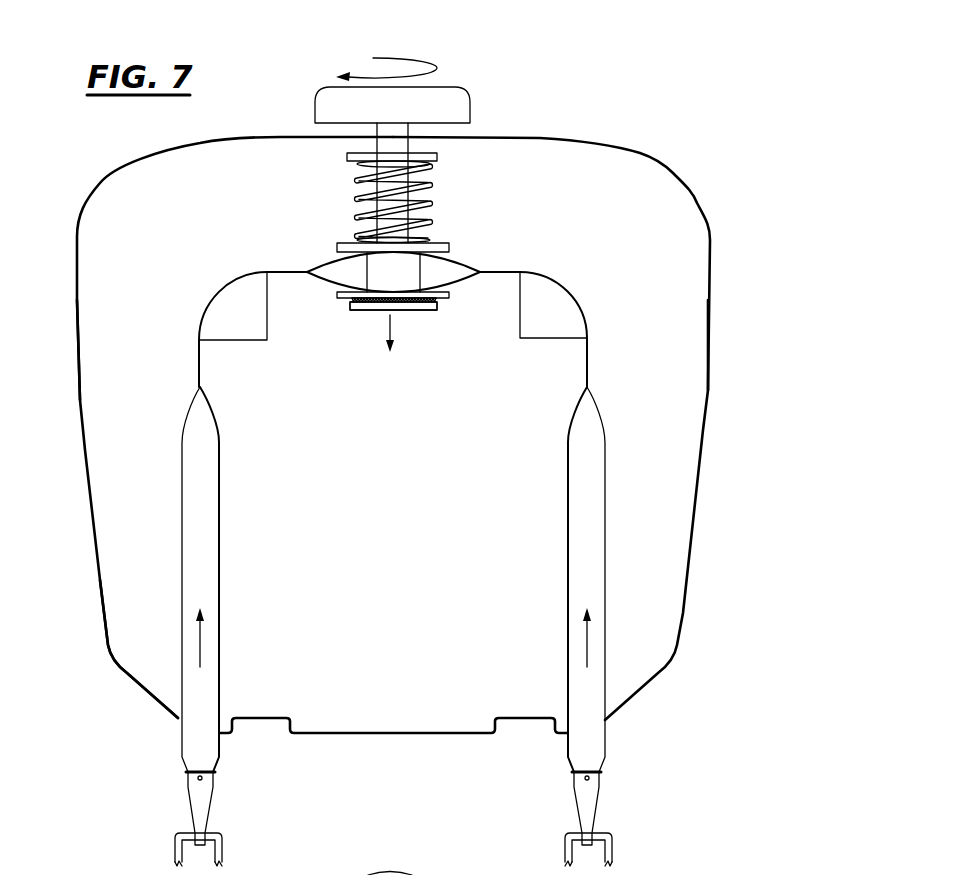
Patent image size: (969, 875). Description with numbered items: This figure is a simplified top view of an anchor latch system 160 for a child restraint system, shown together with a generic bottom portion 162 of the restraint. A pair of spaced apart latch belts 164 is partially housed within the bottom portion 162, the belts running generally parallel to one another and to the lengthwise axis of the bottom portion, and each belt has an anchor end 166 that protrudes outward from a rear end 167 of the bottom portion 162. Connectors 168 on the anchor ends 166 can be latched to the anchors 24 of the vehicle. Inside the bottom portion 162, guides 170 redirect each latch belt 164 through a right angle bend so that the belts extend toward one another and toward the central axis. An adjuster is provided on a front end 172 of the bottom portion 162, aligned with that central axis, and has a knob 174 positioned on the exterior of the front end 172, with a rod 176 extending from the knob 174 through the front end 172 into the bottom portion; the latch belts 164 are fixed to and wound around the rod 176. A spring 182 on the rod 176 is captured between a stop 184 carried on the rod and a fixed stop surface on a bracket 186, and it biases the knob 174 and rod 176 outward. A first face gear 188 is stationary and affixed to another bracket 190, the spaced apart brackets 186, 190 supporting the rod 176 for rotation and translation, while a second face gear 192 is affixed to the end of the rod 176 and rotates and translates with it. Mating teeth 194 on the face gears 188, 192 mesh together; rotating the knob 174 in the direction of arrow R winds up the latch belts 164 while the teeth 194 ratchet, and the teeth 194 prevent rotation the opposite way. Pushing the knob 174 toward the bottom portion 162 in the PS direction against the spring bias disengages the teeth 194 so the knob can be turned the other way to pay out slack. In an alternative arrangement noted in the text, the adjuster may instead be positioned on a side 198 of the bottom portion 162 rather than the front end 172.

The anchor latch system 160 is at (614, 388).
The bottom portion 162 is at (108, 658).
The latch belts 164 is at (200, 547).
The anchor ends 166 is at (232, 760).
The rear end 167 is at (428, 735).
The connectors 168 is at (197, 790).
The anchors 24 is at (175, 848).
The guides 170 is at (245, 318).
The front end 172 is at (523, 137).
The knob 174 is at (455, 102).
The rod 176 is at (410, 143).
The spring 182 is at (357, 193).
The stop 184 is at (360, 150).
The bracket 186 is at (440, 243).
The first face gear 188 is at (350, 300).
The bracket 190 is at (447, 298).
The second face gear 192 is at (362, 308).
The mating teeth 194 is at (378, 312).
The side 198 is at (82, 450).
The rotation direction arrow R is at (375, 71).
The push direction arrow PS is at (392, 346).